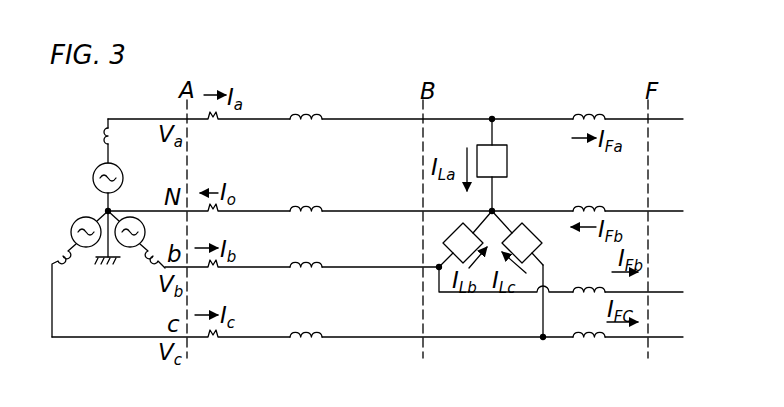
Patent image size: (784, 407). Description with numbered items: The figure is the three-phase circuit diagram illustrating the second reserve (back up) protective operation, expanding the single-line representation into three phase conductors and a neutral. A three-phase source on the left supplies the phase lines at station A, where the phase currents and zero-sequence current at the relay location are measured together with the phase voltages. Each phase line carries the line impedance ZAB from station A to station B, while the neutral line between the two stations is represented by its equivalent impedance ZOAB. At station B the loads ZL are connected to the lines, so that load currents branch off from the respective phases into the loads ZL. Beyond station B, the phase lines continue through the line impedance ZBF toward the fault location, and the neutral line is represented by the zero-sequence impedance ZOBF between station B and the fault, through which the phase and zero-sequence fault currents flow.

The impedance of the line from station A to station B ZAB is at (310, 209).
The equivalent impedance of the neutral line between stations A and B ZOAB is at (315, 193).
The impedance of the line from station B to the fault location ZBF is at (589, 209).
The zero-sequence impedance of the neutral line between station B and the fault loca ZOBF is at (594, 195).
The loads ZL is at (492, 191).